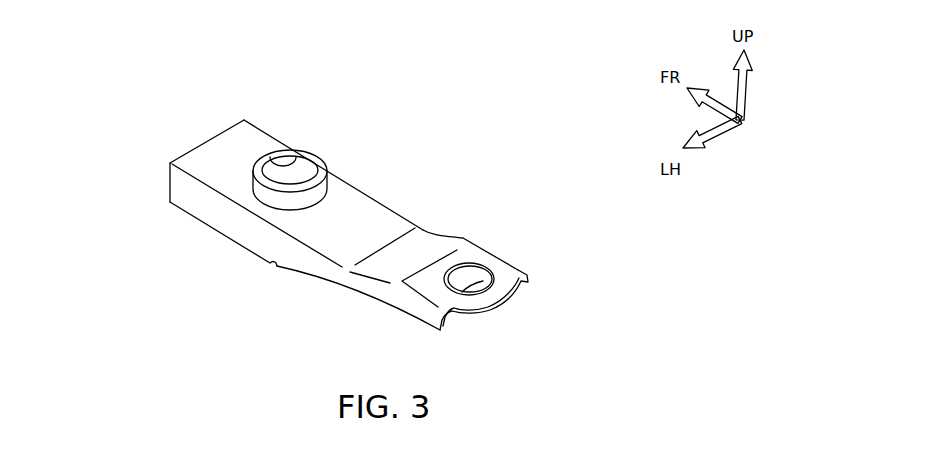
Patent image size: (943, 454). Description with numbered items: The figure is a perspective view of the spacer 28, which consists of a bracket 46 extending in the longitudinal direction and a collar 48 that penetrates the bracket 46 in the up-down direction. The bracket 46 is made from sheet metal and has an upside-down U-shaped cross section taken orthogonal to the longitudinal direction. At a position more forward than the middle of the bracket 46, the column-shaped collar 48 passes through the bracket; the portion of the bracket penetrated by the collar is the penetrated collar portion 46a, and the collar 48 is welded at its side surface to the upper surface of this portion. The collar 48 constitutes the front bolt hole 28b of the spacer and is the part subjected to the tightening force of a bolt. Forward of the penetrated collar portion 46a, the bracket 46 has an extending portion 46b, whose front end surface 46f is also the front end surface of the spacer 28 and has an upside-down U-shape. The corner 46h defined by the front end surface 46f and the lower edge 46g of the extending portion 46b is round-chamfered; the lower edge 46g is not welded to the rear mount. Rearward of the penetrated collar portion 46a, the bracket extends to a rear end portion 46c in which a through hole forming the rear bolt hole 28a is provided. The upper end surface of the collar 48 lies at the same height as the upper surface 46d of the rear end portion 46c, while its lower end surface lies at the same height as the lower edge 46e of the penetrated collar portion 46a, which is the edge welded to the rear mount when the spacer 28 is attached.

The spacer 28 is at (456, 119).
The rear bolt hole 28a is at (500, 300).
The front bolt hole 28b is at (295, 158).
The bracket 46 is at (403, 205).
The penetrated collar portion 46a is at (252, 222).
The extending portion 46b is at (246, 127).
The rear end portion 46c is at (481, 243).
The upper surface of the rear end portion 46d is at (498, 269).
The lower edge of the penetrated collar portion 46e is at (251, 264).
The front end surface 46f is at (214, 136).
The lower edge of the extending portion 46g is at (197, 222).
The corner 46h is at (170, 202).
The collar 48 is at (323, 163).